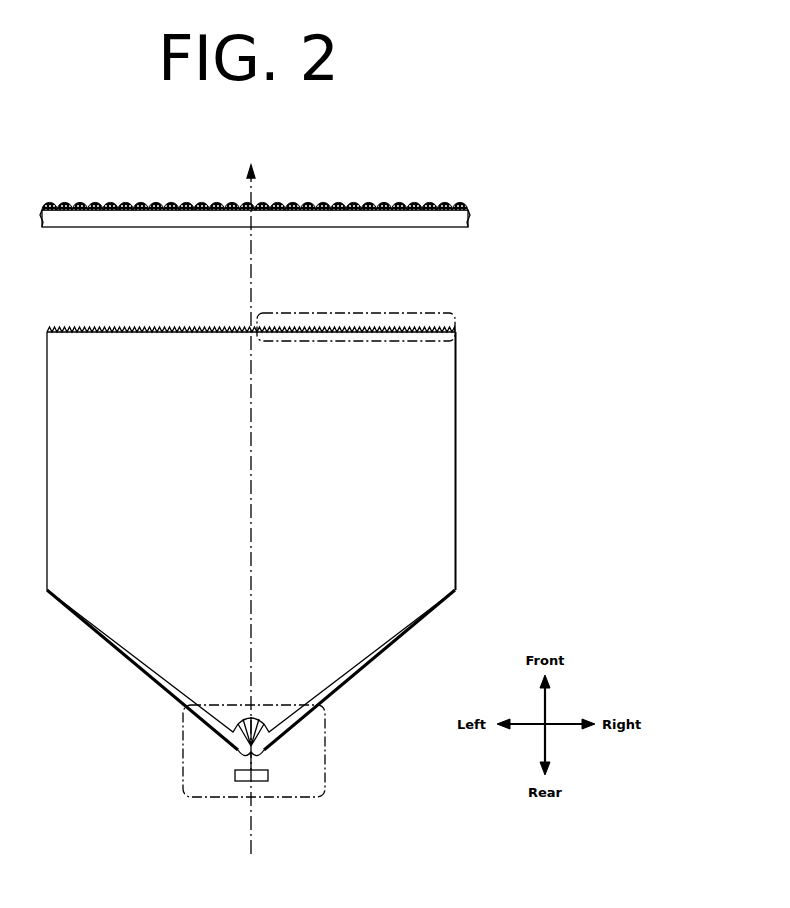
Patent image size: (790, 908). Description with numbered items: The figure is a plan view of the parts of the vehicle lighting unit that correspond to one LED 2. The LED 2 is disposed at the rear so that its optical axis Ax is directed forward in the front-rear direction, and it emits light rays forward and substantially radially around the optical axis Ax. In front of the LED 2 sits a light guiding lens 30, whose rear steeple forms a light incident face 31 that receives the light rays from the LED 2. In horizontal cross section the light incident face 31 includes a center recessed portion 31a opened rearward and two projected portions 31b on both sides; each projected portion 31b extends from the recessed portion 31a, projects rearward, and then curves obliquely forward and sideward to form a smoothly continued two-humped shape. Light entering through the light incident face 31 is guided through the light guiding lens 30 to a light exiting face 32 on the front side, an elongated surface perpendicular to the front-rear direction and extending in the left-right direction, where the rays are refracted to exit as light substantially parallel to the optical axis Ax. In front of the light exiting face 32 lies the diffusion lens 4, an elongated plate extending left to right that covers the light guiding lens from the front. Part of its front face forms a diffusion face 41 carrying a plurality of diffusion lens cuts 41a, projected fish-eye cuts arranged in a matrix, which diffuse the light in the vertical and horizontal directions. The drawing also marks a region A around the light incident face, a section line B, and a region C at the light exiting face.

The light emitting diode 2 is at (268, 783).
The diffusion lens 4 is at (268, 189).
The diffusion face 41 is at (255, 181).
The diffusion lens cuts 41a is at (383, 200).
The light guiding lens 30 is at (281, 552).
The light incident face 31 is at (251, 704).
The recessed portion 31a is at (195, 768).
The projected portion 31b is at (202, 722).
The light exiting face 32 is at (116, 328).
The region A is at (327, 762).
The section B is at (251, 621).
The region C is at (430, 313).
The optical axis Ax is at (249, 501).